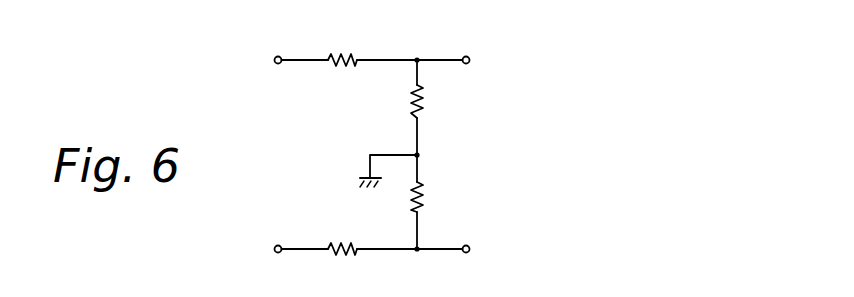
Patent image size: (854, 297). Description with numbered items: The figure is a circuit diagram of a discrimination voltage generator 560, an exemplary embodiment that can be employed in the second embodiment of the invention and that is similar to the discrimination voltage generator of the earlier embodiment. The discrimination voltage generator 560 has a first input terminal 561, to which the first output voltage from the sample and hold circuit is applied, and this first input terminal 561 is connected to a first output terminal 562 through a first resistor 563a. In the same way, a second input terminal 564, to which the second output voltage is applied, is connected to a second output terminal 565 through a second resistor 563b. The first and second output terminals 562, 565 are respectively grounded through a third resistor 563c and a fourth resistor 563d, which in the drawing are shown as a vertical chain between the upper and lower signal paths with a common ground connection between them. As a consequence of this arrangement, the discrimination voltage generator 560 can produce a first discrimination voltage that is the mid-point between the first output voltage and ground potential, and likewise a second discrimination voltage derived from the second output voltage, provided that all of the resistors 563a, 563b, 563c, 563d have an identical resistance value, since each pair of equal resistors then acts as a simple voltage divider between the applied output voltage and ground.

The discrimination voltage generator 560 is at (538, 55).
The first input terminal 561 is at (274, 55).
The first output terminal 562 is at (470, 56).
The first resistor 563a is at (346, 54).
The second resistor 563b is at (344, 244).
The third resistor 563c is at (424, 96).
The fourth resistor 563d is at (426, 189).
The second input terminal 564 is at (274, 245).
The second output terminal 565 is at (470, 249).